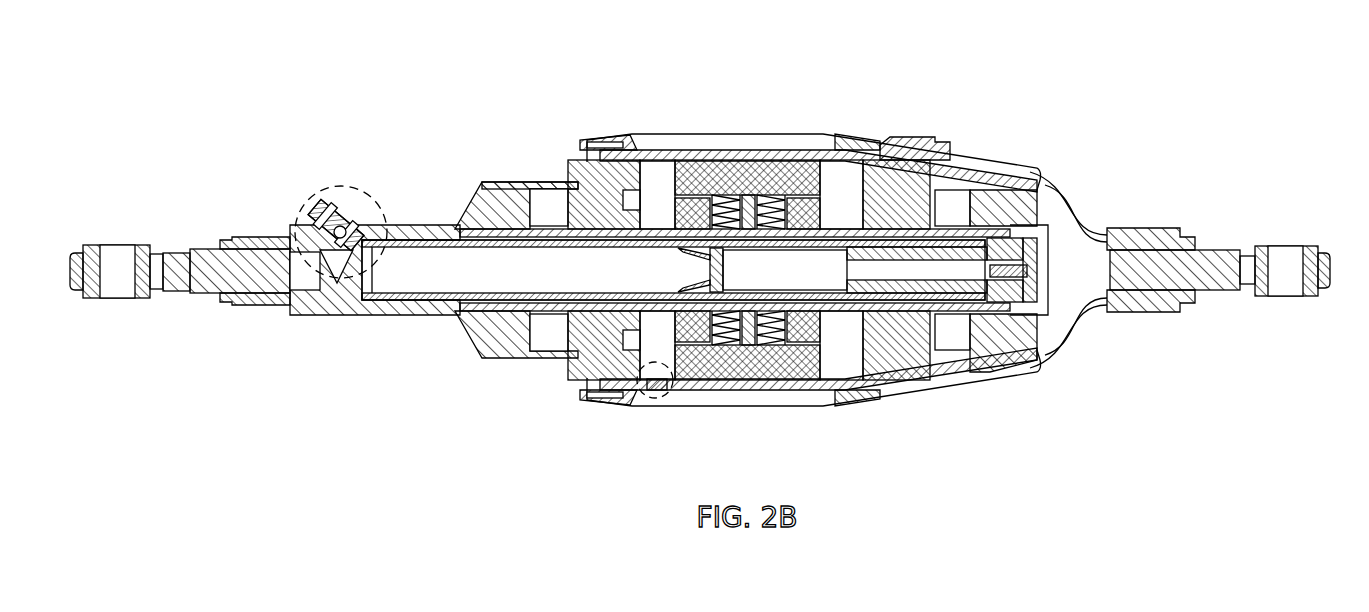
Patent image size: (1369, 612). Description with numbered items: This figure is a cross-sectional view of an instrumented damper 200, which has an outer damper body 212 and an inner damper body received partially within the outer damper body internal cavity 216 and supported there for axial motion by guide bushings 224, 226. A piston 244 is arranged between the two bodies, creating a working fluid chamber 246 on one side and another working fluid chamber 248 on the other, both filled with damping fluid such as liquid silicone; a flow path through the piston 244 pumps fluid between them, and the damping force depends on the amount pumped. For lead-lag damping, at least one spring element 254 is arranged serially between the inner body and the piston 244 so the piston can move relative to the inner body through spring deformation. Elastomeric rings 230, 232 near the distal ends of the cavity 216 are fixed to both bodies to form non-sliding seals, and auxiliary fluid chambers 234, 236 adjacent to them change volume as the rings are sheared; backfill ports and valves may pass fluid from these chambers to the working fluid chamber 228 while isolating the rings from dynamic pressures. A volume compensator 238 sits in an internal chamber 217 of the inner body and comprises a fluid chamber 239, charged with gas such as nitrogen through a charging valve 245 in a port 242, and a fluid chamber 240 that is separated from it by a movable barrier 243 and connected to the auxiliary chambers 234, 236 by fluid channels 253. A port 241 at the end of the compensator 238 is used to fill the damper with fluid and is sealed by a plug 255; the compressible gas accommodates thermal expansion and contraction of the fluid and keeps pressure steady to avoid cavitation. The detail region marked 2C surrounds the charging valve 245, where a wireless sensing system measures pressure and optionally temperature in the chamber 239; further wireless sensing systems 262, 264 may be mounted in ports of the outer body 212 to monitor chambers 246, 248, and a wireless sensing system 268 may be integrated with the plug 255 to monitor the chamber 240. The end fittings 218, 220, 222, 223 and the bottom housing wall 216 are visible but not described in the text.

The instrumented damper 200 is at (750, 104).
The outer damper body 212 is at (825, 134).
The outer damper body internal cavity 216 is at (873, 406).
The internal chamber 217 is at (438, 318).
The right coupling 218 is at (1280, 246).
The right end fitting 220 is at (1147, 315).
The left coupling 222 is at (120, 245).
The input shaft 223 is at (267, 237).
The guide bushing 224 is at (600, 140).
The guide bushing 226 is at (897, 137).
The working fluid chamber 228 is at (657, 392).
The elastomeric ring 230 is at (505, 182).
The elastomeric ring 232 is at (997, 193).
The auxiliary fluid chamber 234 is at (556, 200).
The auxiliary fluid chamber 236 is at (948, 190).
The volume compensator 238 is at (500, 357).
The fluid chamber 239 is at (505, 280).
The fluid chamber 240 is at (763, 280).
The port 241 is at (993, 373).
The port 242 is at (376, 208).
The movable barrier 243 is at (705, 272).
The piston 244 is at (703, 172).
The charging valve 245 is at (325, 196).
The working fluid chamber 246 is at (661, 180).
The working fluid chamber 248 is at (845, 180).
The fluid channel 253 is at (560, 380).
The spring element 254 is at (783, 192).
The plug 255 is at (1038, 259).
The wireless sensing system 262 is at (653, 400).
The wireless sensing system 264 is at (827, 406).
The wireless sensing system 268 is at (1033, 283).
The detail view designator 2C is at (340, 186).